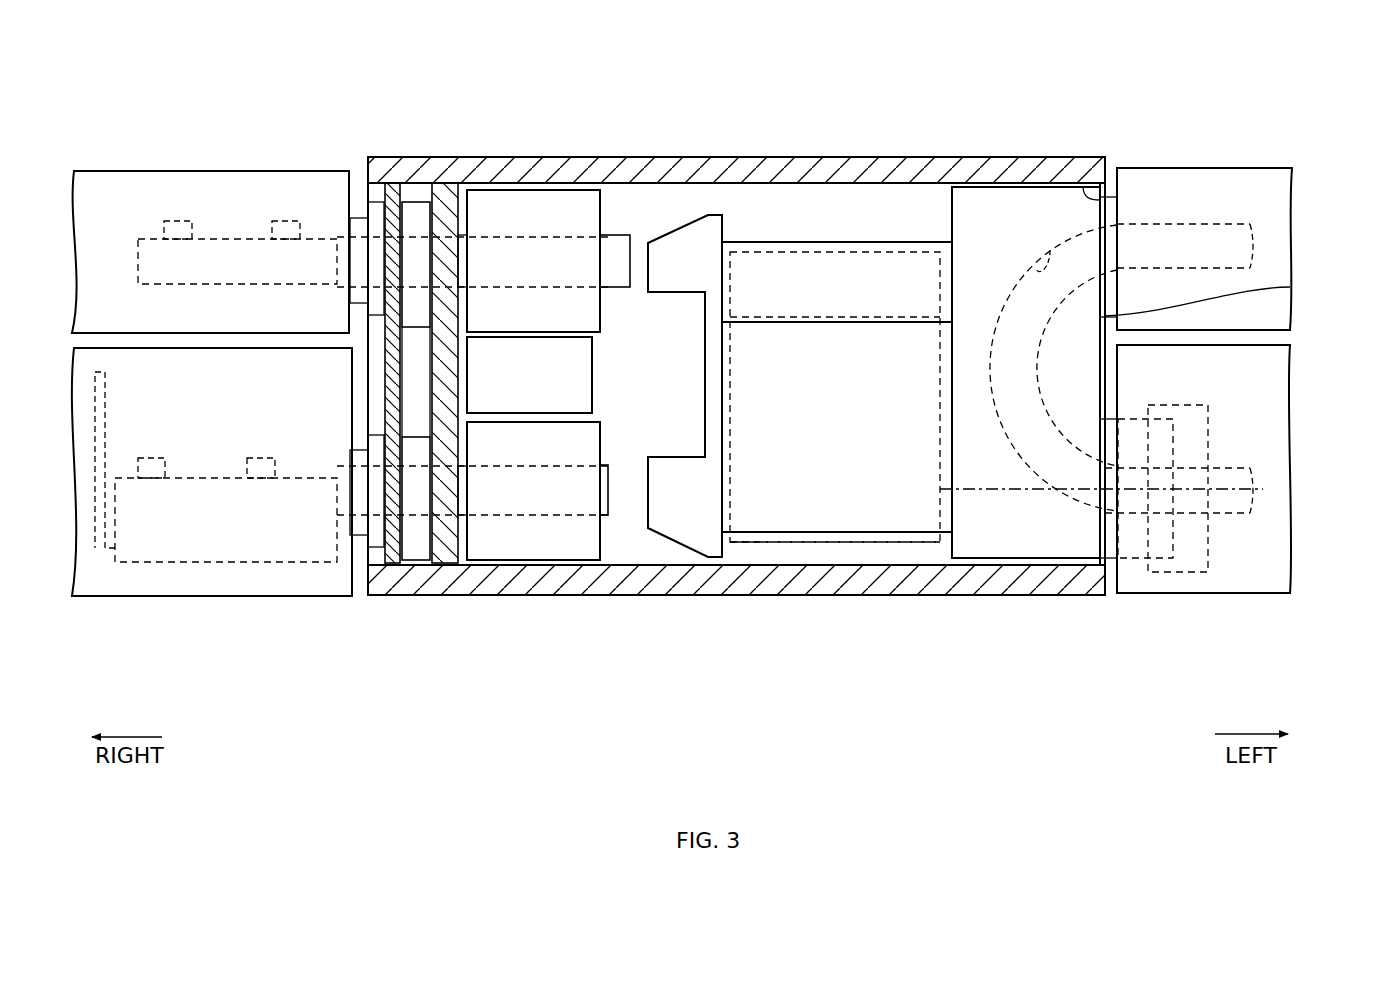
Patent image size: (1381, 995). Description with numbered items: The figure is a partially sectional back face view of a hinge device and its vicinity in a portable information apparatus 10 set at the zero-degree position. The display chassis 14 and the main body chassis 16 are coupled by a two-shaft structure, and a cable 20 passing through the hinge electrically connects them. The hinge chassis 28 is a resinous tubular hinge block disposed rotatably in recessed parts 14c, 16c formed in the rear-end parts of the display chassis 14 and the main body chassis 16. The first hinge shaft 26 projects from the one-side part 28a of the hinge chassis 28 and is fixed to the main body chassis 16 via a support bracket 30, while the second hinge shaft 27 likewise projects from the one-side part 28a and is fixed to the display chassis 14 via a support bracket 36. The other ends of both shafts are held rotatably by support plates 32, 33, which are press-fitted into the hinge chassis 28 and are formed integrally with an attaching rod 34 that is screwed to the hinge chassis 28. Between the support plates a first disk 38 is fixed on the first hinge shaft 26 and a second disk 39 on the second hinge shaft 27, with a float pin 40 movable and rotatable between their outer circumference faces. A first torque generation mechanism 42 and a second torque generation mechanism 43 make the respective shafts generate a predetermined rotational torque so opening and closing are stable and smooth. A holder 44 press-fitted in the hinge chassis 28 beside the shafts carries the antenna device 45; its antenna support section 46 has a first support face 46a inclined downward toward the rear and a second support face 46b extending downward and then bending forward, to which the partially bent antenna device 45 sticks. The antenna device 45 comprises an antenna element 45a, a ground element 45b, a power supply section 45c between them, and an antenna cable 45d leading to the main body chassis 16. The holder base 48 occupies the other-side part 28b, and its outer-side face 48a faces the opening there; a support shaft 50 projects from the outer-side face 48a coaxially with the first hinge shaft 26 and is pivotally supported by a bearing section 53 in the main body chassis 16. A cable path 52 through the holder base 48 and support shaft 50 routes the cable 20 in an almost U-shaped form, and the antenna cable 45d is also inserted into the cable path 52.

The connector assembly 10 is at (123, 37).
The display chassis 14 is at (122, 165).
The recessed part 14c is at (1083, 186).
The main body chassis 16 is at (143, 600).
The recessed part 16c is at (352, 582).
The cable 20 is at (1178, 222).
The first hinge shaft 26 is at (610, 515).
The second hinge shaft 27 is at (612, 245).
The hinge chassis 28 is at (718, 150).
The one-side part 28a is at (368, 166).
The other-side part 28b is at (1105, 163).
The support bracket 30 is at (228, 565).
The support plate 32 is at (392, 185).
The support plate 33 is at (445, 200).
The attaching rod 34 is at (585, 372).
The support bracket 36 is at (249, 239).
The first disk 38 is at (415, 568).
The second disk 39 is at (410, 202).
The float pin 40 is at (413, 372).
The first torque generation mechanism 42 is at (540, 545).
The second torque generation mechanism 43 is at (527, 198).
The holder 44 is at (993, 701).
The antenna device 45 is at (795, 550).
The antenna element 45a is at (893, 255).
The ground element 45b is at (748, 540).
The power supply section 45c is at (1086, 263).
The antenna cable 45d is at (1227, 490).
The antenna support section 46 is at (893, 510).
The first support face 46a is at (815, 270).
The second support face 46b is at (838, 505).
The holder base 48 is at (998, 542).
The outer-side face 48a is at (1290, 287).
The support shaft 50 is at (1135, 596).
The cable path 52 is at (1050, 250).
The bearing section 53 is at (1185, 596).